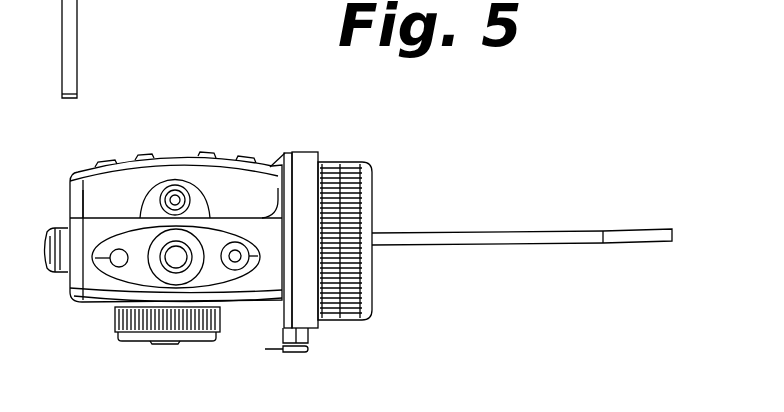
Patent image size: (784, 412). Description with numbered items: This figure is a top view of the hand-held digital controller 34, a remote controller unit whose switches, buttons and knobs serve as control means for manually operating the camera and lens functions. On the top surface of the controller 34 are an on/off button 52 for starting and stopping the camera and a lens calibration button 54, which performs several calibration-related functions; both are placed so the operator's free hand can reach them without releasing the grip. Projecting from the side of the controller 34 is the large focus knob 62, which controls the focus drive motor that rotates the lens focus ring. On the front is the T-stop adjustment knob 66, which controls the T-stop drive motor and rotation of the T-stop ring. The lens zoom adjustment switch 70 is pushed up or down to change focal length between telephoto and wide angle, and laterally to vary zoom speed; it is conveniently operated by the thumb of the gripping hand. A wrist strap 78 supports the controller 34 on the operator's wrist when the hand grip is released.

The digital controller 34 is at (201, 125).
The on/off button 52 is at (235, 271).
The lens calibration button 54 is at (113, 266).
The focus knob 62 is at (350, 162).
The T-stop adjustment knob 66 is at (117, 326).
The lens zoom adjustment switch 70 is at (45, 240).
The wrist strap 78 is at (77, 40).